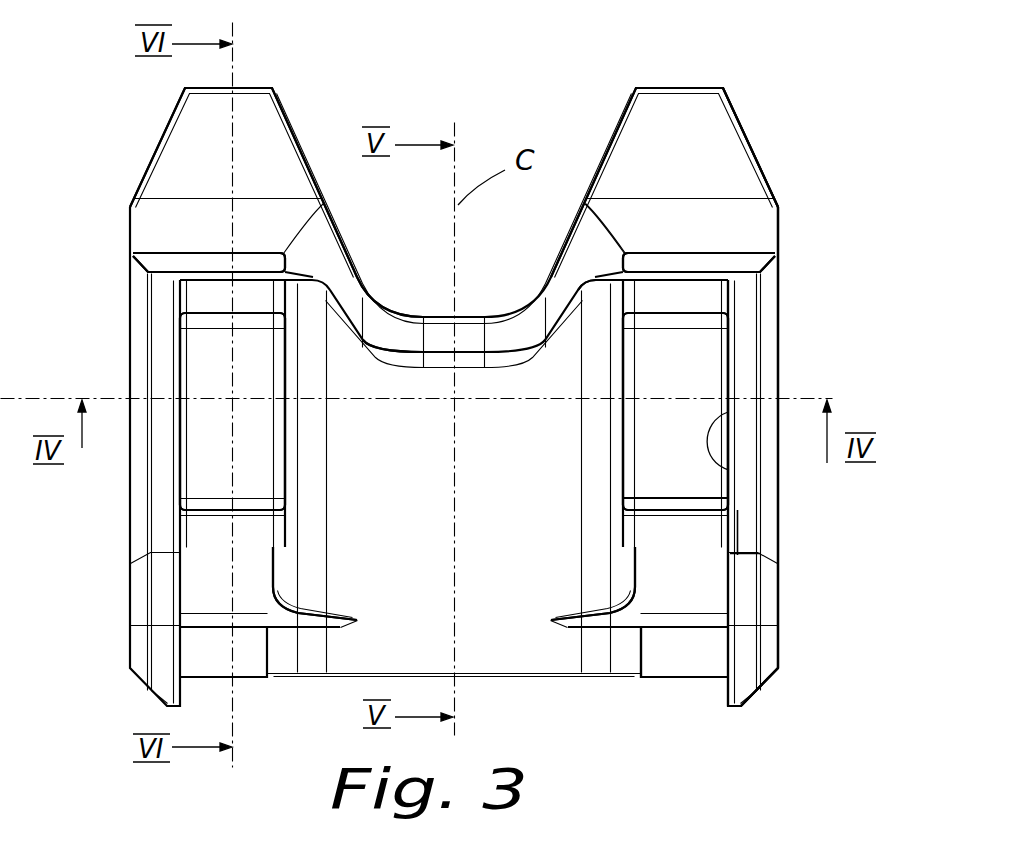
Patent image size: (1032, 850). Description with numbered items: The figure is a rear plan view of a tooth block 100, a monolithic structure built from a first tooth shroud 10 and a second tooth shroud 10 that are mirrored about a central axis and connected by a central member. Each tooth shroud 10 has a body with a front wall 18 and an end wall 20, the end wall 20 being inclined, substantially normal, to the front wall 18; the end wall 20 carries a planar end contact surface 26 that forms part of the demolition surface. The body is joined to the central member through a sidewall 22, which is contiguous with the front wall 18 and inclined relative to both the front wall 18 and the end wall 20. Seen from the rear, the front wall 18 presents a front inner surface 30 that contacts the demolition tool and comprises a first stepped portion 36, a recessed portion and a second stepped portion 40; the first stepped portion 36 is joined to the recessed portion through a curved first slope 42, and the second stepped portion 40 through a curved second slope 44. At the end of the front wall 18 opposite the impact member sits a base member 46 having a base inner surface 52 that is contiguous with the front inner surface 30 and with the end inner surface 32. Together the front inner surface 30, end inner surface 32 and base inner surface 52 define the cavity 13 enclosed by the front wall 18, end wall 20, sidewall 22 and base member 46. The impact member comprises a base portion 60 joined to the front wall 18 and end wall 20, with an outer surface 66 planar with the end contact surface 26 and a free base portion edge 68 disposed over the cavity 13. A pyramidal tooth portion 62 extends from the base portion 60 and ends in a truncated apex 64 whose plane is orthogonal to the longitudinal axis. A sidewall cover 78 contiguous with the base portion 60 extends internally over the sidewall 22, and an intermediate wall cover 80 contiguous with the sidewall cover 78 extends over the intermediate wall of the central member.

The tooth shroud 10 is at (300, 127).
The tooth block 100 is at (802, 155).
The cavity 13 is at (733, 357).
The front wall 18 is at (617, 470).
The end wall 20 is at (814, 372).
The sidewall 22 is at (320, 335).
The end contact surface 26 is at (780, 317).
The front inner surface 30 is at (200, 478).
The end inner surface 32 is at (730, 469).
The first stepped portion 36 is at (660, 300).
The second stepped portion 40 is at (707, 532).
The first slope 42 is at (200, 325).
The second slope 44 is at (195, 503).
The base member 46 is at (687, 648).
The base inner surface 52 is at (680, 627).
The base portion 60 is at (748, 217).
The tooth portion 62 is at (728, 147).
The truncated apex 64 is at (674, 88).
The outer surface 66 is at (780, 235).
The base portion edge 68 is at (683, 283).
The sidewall cover 78 is at (383, 303).
The intermediate wall cover 80 is at (433, 340).